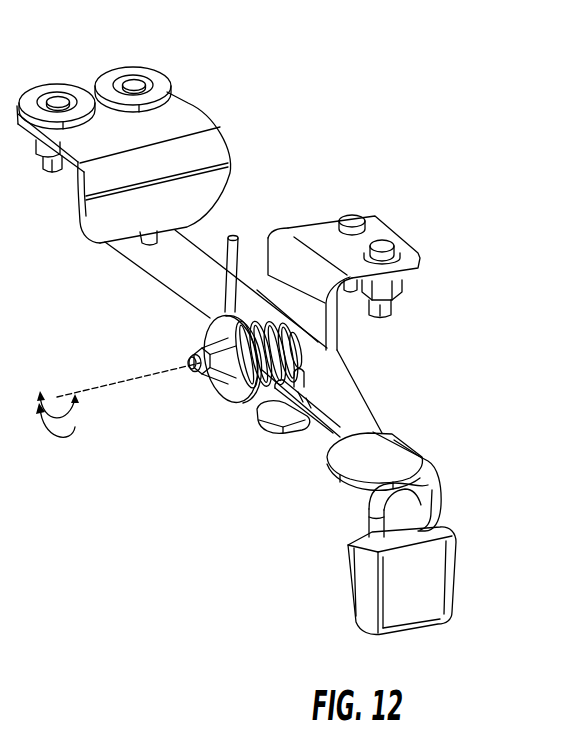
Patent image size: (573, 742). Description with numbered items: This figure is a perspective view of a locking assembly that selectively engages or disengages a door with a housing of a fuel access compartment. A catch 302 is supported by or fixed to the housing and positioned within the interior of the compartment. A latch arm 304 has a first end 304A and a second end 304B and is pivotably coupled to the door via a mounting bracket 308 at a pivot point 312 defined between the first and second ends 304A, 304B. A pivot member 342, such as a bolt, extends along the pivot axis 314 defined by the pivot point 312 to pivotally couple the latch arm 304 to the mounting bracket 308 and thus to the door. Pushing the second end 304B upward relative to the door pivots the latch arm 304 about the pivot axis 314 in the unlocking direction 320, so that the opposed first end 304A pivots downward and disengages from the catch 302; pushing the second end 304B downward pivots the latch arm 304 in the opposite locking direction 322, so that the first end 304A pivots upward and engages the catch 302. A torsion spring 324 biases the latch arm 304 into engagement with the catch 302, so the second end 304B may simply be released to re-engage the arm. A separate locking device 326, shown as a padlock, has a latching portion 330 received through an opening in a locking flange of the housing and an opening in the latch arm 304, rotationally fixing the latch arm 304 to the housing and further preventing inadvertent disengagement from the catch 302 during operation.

The catch 302 is at (188, 114).
The latch arm 304 is at (279, 380).
The first end of latch arm 304A is at (141, 265).
The second end of latch arm 304B is at (436, 489).
The mounting bracket 308 is at (376, 228).
The pivot point 312 is at (195, 378).
The pivot axis 314 is at (157, 373).
The unlocking direction 320 is at (43, 400).
The locking direction 322 is at (54, 438).
The torsion spring 324 is at (251, 247).
The locking device 326 is at (445, 595).
The latching portion 330 is at (370, 518).
The pivot member 342 is at (307, 350).